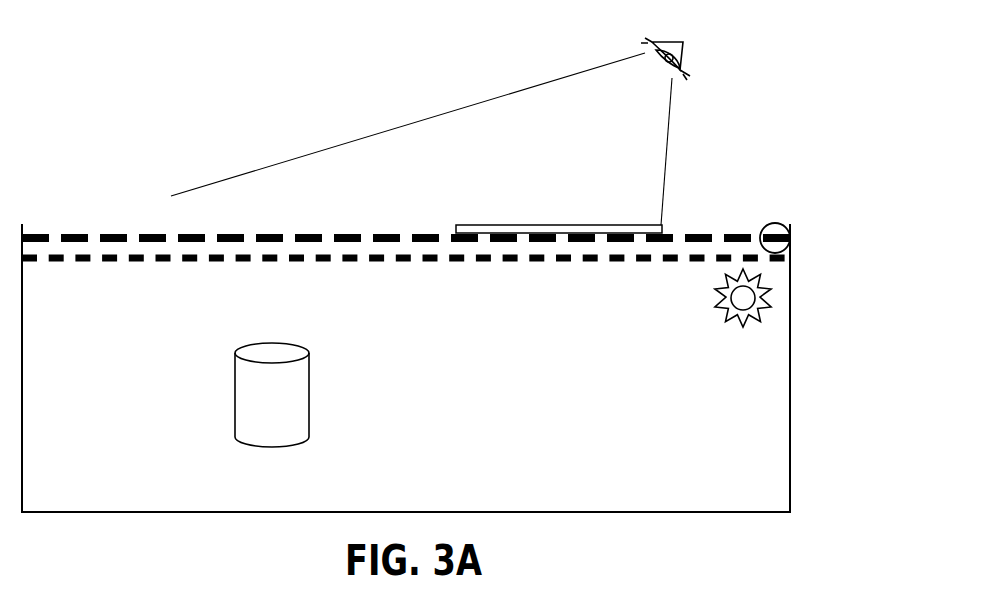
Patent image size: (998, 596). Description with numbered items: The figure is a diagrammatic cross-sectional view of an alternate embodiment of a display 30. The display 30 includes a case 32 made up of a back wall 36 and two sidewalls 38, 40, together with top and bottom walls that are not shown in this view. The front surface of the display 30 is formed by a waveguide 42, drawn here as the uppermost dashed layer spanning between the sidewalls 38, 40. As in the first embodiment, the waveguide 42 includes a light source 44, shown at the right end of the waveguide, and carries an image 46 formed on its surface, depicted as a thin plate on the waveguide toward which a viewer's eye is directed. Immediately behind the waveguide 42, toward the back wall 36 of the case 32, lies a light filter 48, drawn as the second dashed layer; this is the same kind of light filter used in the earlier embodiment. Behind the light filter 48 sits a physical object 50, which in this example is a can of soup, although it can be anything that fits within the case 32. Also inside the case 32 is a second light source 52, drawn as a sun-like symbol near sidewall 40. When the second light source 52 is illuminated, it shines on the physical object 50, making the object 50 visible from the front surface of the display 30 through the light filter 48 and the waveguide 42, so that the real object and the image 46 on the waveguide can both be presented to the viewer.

The display 30 is at (884, 308).
The case 32 is at (791, 412).
The back wall 36 is at (407, 511).
The sidewall 38 is at (23, 398).
The sidewall 40 is at (789, 460).
The waveguide 42 is at (70, 233).
The light source 44 is at (781, 224).
The image 46 is at (664, 228).
The light filter 48 is at (133, 254).
The physical object 50 is at (311, 398).
The second light source 52 is at (733, 326).